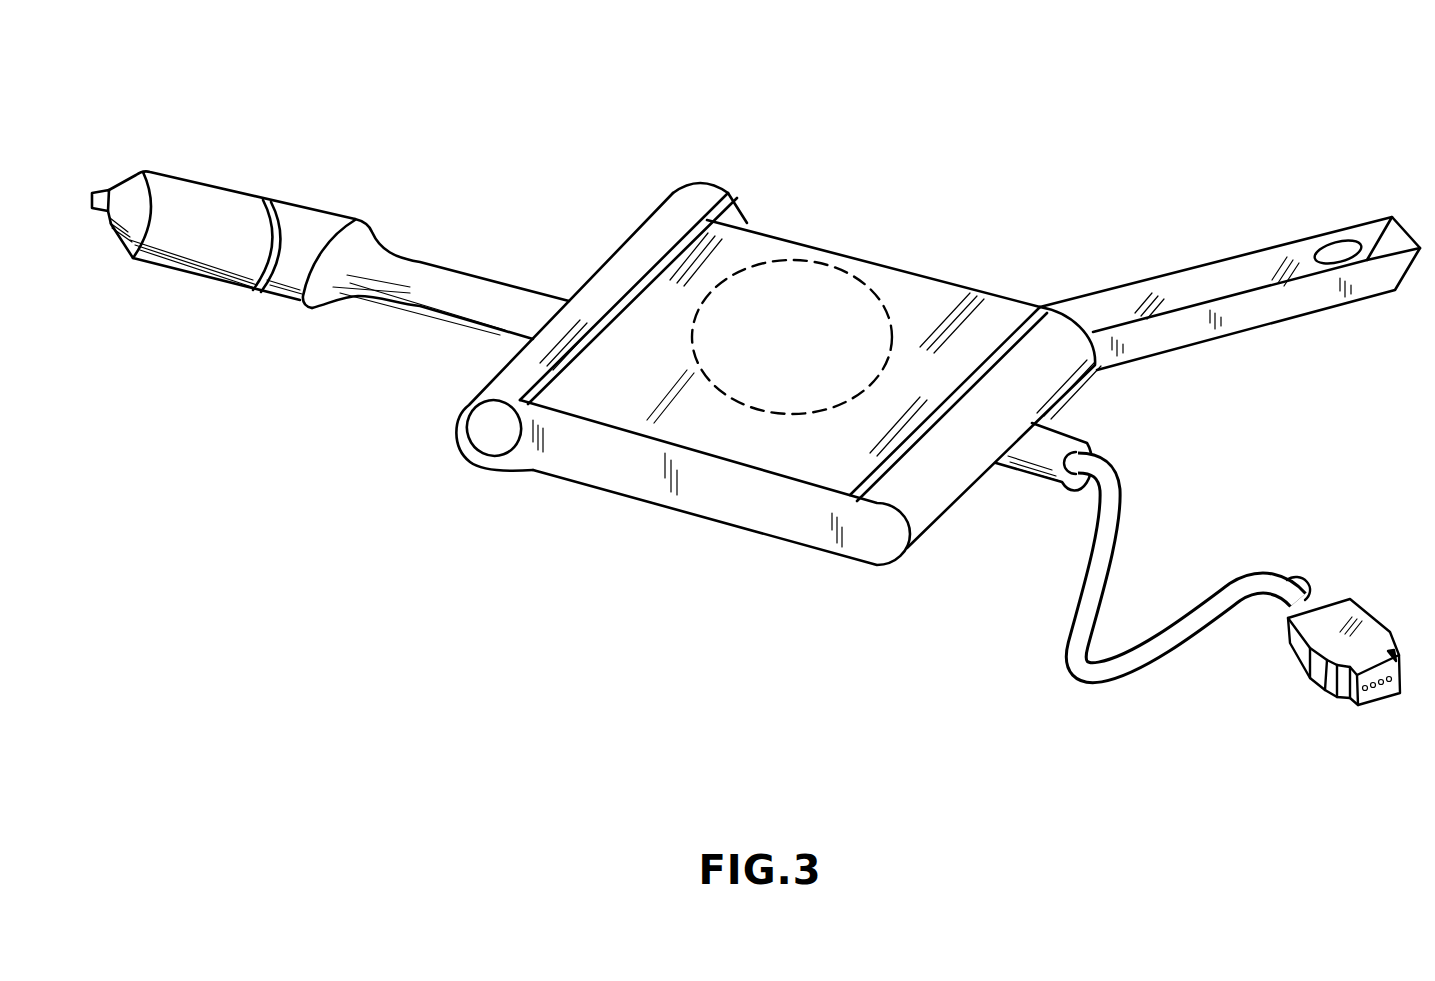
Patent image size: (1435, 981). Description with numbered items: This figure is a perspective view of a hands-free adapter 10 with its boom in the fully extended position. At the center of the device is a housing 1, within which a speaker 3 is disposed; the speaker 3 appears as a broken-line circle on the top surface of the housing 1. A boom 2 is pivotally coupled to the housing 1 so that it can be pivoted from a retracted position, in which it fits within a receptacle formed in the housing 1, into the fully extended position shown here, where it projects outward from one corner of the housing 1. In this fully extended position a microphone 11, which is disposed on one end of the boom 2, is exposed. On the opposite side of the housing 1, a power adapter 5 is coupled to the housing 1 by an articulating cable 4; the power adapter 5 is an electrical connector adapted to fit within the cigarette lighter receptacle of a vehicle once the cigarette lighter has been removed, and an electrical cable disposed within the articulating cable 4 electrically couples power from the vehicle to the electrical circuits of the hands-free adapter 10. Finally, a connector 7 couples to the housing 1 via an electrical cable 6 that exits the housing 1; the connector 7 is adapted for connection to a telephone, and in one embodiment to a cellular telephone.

The housing 1 is at (648, 455).
The boom 2 is at (1258, 335).
The speaker 3 is at (876, 316).
The articulating cable 4 is at (425, 318).
The power adapter 5 is at (229, 183).
The electrical cable 6 is at (1266, 572).
The connector 7 is at (1371, 614).
The hands-free adapter 10 is at (998, 72).
The microphone 11 is at (1341, 250).